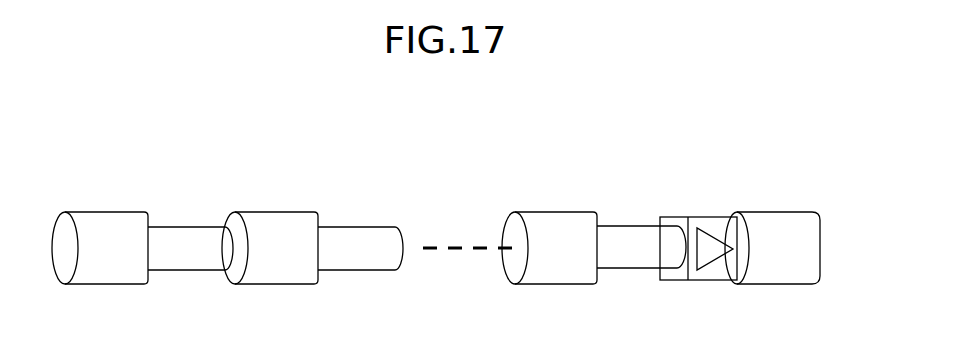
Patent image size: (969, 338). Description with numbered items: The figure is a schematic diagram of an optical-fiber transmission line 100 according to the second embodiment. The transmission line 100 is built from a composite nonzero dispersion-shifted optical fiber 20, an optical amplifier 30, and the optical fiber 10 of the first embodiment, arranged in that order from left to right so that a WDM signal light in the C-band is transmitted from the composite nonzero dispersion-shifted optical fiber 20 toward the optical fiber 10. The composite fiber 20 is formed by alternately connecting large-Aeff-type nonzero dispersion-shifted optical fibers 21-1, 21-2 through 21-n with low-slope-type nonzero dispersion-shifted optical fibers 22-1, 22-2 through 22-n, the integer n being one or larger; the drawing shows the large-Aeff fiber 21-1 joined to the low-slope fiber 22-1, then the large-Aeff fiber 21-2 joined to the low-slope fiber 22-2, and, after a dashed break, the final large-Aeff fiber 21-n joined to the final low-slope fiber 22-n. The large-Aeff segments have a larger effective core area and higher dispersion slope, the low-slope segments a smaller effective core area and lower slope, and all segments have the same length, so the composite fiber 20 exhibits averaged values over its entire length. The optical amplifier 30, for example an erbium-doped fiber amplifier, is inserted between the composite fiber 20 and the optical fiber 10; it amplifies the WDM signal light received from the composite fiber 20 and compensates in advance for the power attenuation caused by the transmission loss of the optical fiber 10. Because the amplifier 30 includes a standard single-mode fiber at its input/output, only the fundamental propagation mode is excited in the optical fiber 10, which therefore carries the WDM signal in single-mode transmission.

The optical-fiber transmission line 100 is at (562, 123).
The composite nonzero dispersion-shifted optical fiber 20 is at (282, 143).
The large-Aeff-type nonzero dispersion-shifted optical fiber 21-1 is at (85, 212).
The low-slope-type nonzero dispersion-shifted optical fiber 22-1 is at (168, 227).
The large-Aeff-type nonzero dispersion-shifted optical fiber 21-2 is at (270, 212).
The low-slope-type nonzero dispersion-shifted optical fiber 22-2 is at (355, 227).
The large-Aeff-type nonzero dispersion-shifted optical fiber 21-n is at (537, 212).
The low-slope-type nonzero dispersion-shifted optical fiber 22-n is at (617, 226).
The optical amplifier 30 is at (692, 217).
The optical fiber 10 is at (768, 212).